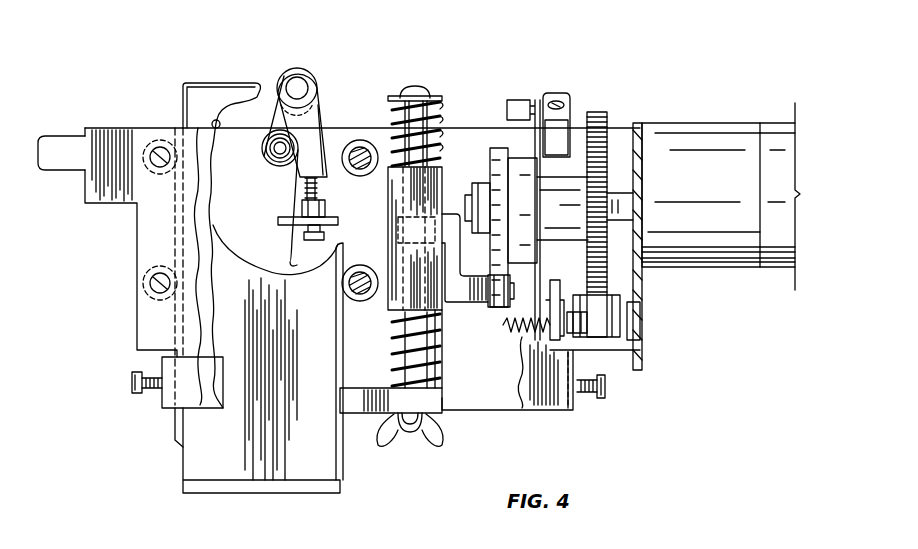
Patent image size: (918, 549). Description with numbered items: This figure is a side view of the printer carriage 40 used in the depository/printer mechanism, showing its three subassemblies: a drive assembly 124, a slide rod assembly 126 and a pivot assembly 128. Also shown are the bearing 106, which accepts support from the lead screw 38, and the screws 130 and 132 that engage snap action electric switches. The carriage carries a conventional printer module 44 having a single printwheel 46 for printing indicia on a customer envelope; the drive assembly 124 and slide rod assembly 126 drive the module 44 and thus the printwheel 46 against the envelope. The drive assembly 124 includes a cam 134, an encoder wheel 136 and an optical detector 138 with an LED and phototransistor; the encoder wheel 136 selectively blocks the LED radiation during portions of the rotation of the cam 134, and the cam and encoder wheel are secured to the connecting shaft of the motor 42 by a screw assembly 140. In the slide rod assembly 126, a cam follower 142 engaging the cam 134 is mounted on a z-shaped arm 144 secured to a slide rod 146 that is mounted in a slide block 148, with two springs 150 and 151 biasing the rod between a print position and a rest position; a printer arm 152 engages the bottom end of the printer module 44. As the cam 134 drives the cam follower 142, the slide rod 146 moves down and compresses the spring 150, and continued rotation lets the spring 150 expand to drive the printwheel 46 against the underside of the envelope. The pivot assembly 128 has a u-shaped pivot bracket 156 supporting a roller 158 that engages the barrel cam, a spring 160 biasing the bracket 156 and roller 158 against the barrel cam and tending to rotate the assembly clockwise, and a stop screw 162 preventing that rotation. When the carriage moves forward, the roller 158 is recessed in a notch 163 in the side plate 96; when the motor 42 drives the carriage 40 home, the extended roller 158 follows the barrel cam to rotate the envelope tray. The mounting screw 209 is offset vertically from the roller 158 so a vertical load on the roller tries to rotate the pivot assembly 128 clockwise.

The lead screw 38 is at (528, 337).
The printer carriage 40 is at (108, 363).
The motor 42 is at (717, 184).
The printer module 44 is at (302, 437).
The printwheel 46 is at (254, 78).
The side plate 96 is at (260, 246).
The bearing 106 is at (583, 262).
The drive assembly 124 is at (611, 126).
The slide rod assembly 126 is at (446, 108).
The pivot assembly 128 is at (323, 86).
The screw 130 is at (133, 384).
The screw 132 is at (606, 390).
The cam 134 is at (491, 160).
The encoder wheel 136 is at (526, 142).
The optical detector 138 is at (506, 105).
The screw assembly 140 is at (473, 200).
The cam follower 142 is at (497, 308).
The z-shaped arm 144 is at (482, 306).
The slide rod 146 is at (393, 101).
The slide block 148 is at (395, 312).
The spring 150 is at (395, 117).
The spring 151 is at (432, 376).
The printer arm 152 is at (392, 416).
The u-shaped pivot bracket 156 is at (334, 178).
The roller 158 is at (295, 66).
The spring 160 is at (292, 198).
The stop screw 162 is at (326, 236).
The notch 163 is at (212, 123).
The mounting screw 209 is at (272, 162).